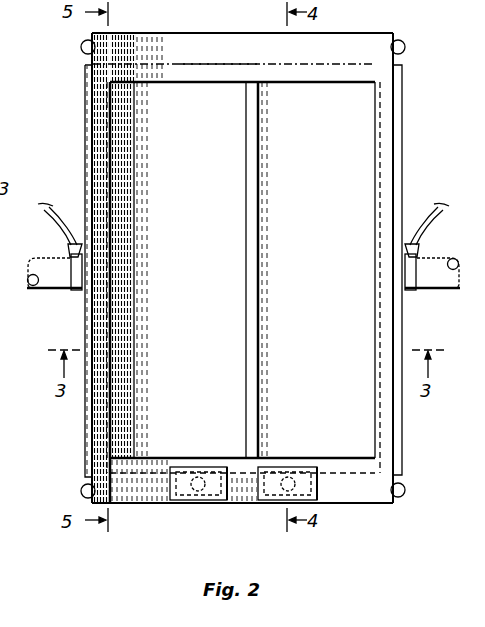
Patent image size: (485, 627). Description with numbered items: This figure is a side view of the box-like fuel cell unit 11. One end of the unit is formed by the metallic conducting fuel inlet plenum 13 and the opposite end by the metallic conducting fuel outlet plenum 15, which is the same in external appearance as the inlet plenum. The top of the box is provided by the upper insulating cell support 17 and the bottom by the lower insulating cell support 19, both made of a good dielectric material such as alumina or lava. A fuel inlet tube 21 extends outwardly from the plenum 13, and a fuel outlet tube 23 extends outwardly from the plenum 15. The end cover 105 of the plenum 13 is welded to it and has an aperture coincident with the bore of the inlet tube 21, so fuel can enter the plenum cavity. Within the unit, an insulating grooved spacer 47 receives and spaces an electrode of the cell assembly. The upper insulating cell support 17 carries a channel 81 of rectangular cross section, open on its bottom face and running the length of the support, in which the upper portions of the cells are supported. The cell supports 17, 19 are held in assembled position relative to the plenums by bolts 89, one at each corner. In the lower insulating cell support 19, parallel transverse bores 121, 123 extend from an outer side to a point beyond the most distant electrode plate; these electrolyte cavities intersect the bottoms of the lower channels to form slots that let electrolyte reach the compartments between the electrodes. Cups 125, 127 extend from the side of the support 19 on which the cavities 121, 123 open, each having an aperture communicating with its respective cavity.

The unit 11 is at (345, 27).
The fuel inlet plenum 13 is at (103, 134).
The fuel outlet plenum 15 is at (388, 77).
The upper insulating cell support 17 is at (143, 42).
The lower insulating cell support 19 is at (149, 497).
The fuel inlet tube 21 is at (50, 290).
The fuel outlet tube 23 is at (445, 292).
The insulating grooved spacer 47 is at (252, 95).
The channel 81 is at (218, 66).
The bolt 89 is at (84, 47).
The end cover 105 is at (83, 181).
The transverse bore 121 is at (203, 507).
The transverse bore 123 is at (288, 493).
The cup 125 is at (230, 493).
The cup 127 is at (325, 487).